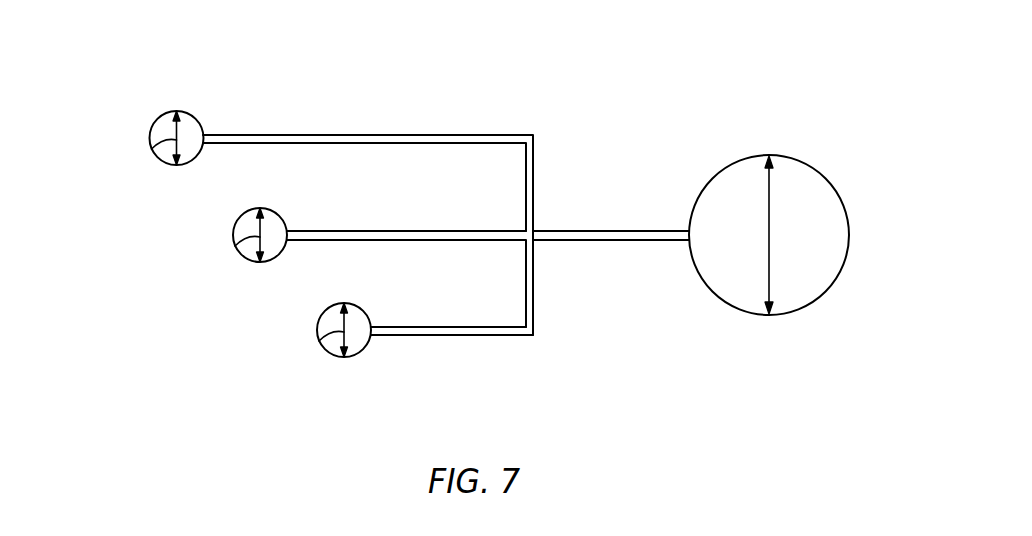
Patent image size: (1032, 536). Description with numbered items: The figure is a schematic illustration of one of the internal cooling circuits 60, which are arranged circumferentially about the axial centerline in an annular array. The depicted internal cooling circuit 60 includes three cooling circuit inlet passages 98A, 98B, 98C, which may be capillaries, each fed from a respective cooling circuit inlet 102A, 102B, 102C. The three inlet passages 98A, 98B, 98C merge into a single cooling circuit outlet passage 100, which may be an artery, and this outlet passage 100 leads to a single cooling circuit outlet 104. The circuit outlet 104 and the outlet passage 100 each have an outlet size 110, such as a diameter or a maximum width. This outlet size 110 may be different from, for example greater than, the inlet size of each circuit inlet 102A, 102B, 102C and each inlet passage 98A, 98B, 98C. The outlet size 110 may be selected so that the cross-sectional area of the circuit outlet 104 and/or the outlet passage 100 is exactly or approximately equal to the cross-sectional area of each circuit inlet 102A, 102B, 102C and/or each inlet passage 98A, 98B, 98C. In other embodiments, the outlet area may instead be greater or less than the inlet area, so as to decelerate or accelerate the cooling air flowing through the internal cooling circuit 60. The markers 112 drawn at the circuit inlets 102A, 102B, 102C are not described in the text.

The internal cooling circuit 60 is at (623, 90).
The cooling circuit inlet passage 98A is at (361, 134).
The cooling circuit inlet passage 98B is at (383, 231).
The cooling circuit inlet passage 98C is at (435, 336).
The cooling circuit outlet passage 100 is at (612, 230).
The cooling circuit inlet 102A is at (150, 146).
The cooling circuit inlet 102B is at (233, 242).
The cooling circuit inlet 102C is at (318, 338).
The cooling circuit outlet 104 is at (843, 189).
The outlet size 110 is at (768, 235).
The pump flow indicator 112 is at (152, 153).